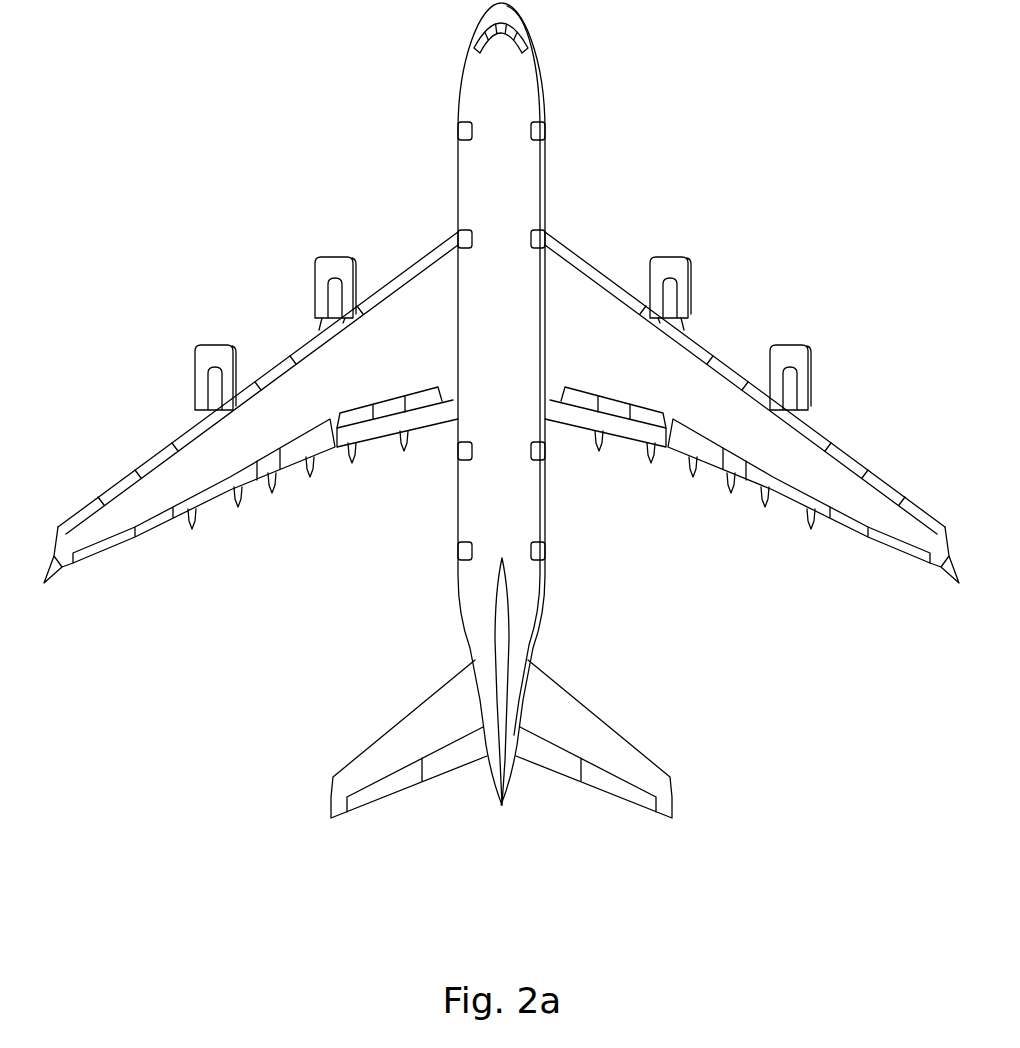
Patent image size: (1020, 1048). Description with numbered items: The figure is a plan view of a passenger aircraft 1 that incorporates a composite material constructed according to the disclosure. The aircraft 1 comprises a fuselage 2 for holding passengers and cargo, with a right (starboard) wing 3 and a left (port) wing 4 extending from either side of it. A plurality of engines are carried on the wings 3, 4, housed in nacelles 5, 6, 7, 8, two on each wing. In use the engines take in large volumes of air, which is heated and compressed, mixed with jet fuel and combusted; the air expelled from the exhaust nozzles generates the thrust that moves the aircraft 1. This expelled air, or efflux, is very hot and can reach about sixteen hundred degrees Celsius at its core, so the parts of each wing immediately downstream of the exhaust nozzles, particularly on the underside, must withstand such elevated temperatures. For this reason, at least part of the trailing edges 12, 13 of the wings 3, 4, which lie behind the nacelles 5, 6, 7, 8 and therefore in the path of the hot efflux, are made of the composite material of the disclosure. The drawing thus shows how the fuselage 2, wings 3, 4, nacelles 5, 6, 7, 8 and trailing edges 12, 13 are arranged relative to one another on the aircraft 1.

The aircraft 1 is at (240, 96).
The fuselage 2 is at (470, 517).
The right (starboard) wing 3 is at (848, 500).
The left (port) wing 4 is at (158, 488).
The nacelle 5 is at (207, 352).
The nacelle 6 is at (332, 257).
The nacelle 7 is at (668, 258).
The nacelle 8 is at (795, 352).
The trailing edge 12 is at (748, 492).
The trailing edge 13 is at (263, 500).